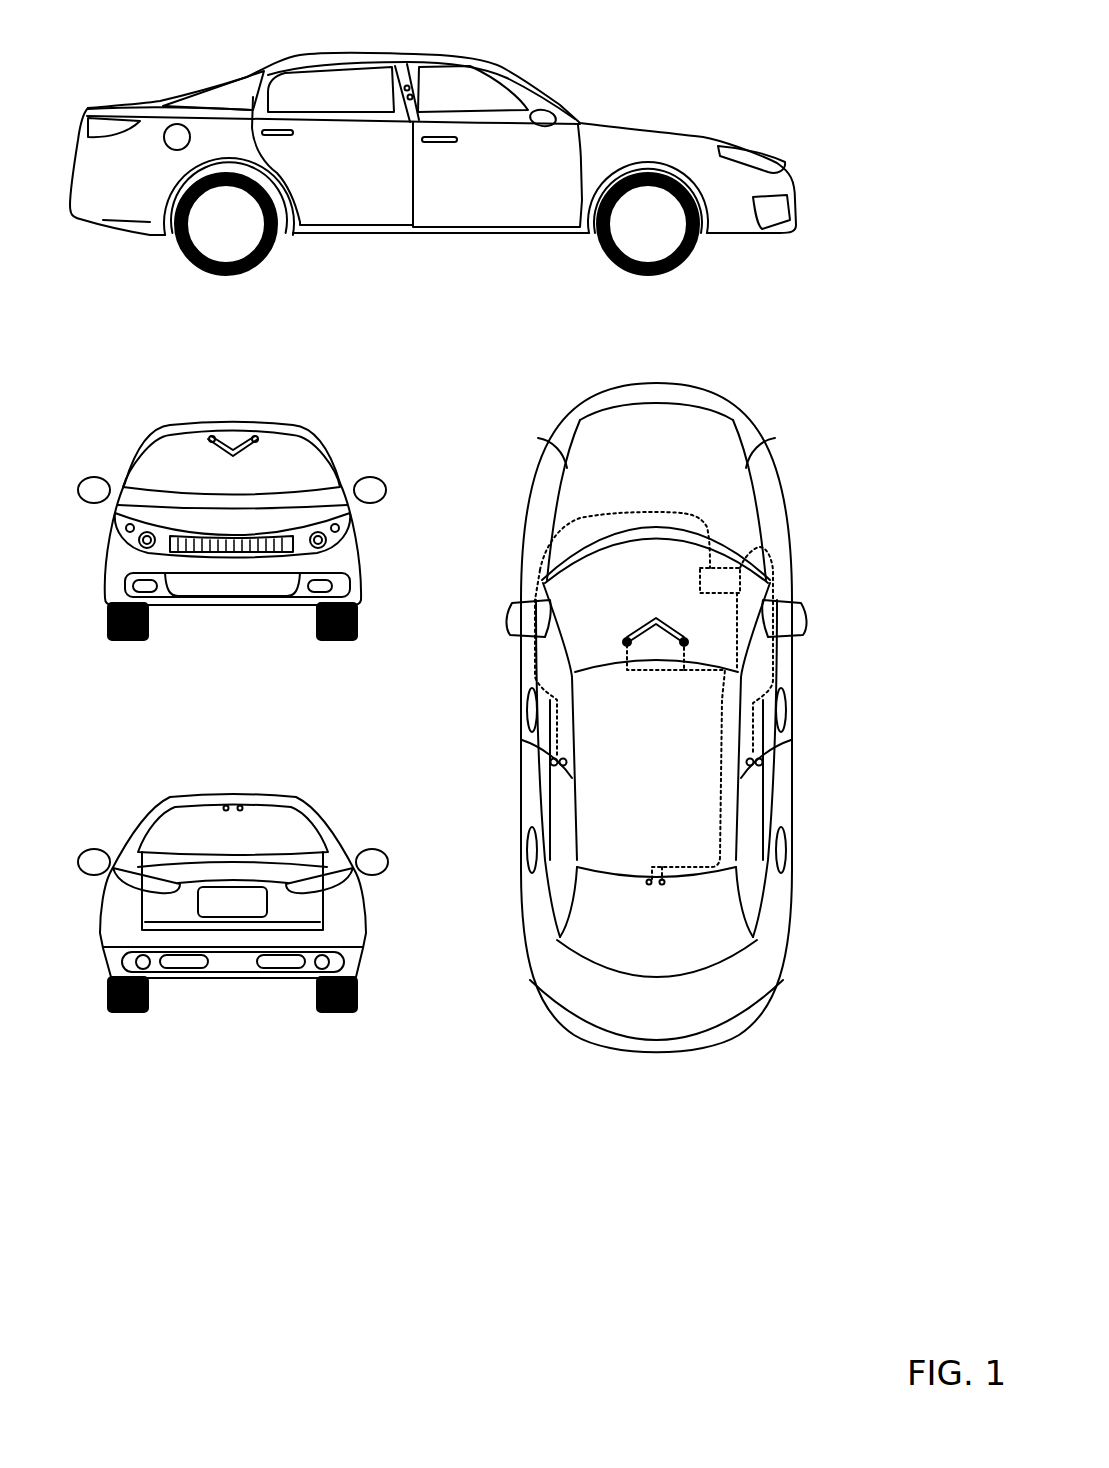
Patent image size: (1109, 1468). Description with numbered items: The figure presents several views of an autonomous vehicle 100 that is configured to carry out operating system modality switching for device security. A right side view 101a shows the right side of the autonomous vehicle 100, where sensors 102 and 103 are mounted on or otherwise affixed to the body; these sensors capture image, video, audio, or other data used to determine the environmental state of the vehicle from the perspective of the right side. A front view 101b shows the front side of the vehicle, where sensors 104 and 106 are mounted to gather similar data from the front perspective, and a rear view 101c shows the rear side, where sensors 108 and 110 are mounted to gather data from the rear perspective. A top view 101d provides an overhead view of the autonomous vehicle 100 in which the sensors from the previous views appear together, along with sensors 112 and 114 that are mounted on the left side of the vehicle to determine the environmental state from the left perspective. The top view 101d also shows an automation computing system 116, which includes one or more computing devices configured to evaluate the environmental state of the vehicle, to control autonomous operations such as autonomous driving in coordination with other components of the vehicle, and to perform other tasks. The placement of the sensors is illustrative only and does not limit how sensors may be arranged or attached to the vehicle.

The autonomous vehicle 100 is at (472, 539).
The right side view 101a is at (664, 73).
The front view 101b is at (369, 413).
The rear view 101c is at (339, 787).
The top view 101d is at (807, 455).
The sensor 102 is at (413, 97).
The sensor 103 is at (410, 87).
The sensor 104 is at (212, 436).
The sensor 106 is at (255, 436).
The sensor 108 is at (226, 805).
The sensor 110 is at (241, 805).
The sensor 112 is at (554, 766).
The sensor 114 is at (563, 767).
The automation computing system 116 is at (727, 567).